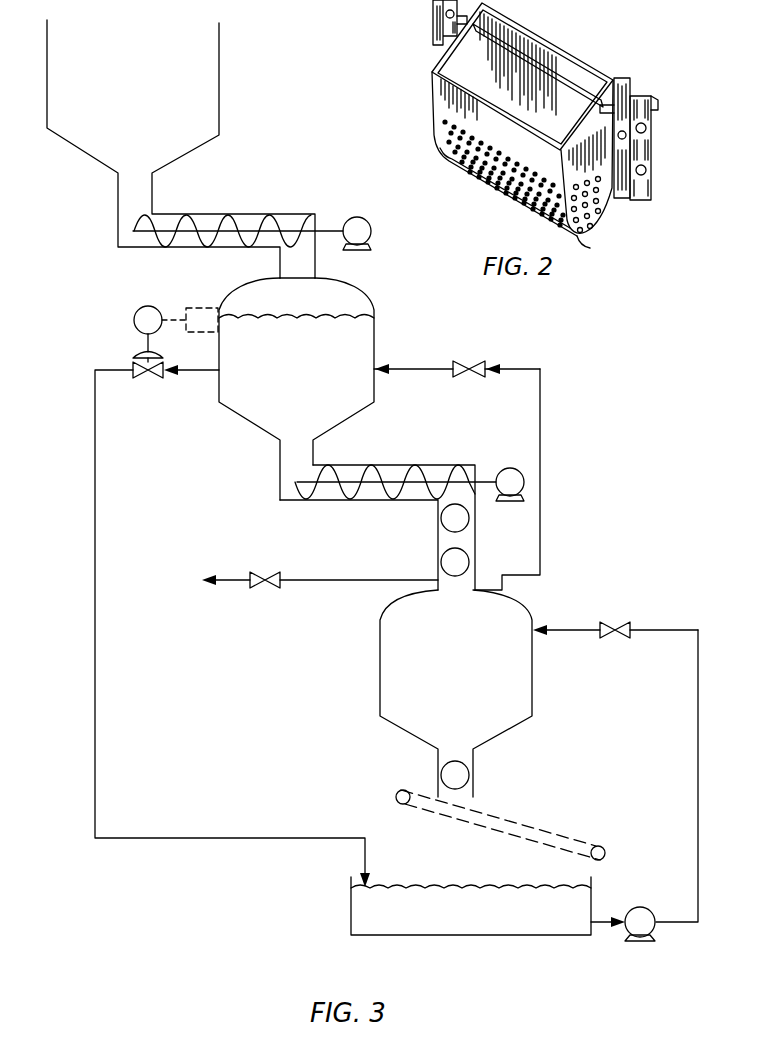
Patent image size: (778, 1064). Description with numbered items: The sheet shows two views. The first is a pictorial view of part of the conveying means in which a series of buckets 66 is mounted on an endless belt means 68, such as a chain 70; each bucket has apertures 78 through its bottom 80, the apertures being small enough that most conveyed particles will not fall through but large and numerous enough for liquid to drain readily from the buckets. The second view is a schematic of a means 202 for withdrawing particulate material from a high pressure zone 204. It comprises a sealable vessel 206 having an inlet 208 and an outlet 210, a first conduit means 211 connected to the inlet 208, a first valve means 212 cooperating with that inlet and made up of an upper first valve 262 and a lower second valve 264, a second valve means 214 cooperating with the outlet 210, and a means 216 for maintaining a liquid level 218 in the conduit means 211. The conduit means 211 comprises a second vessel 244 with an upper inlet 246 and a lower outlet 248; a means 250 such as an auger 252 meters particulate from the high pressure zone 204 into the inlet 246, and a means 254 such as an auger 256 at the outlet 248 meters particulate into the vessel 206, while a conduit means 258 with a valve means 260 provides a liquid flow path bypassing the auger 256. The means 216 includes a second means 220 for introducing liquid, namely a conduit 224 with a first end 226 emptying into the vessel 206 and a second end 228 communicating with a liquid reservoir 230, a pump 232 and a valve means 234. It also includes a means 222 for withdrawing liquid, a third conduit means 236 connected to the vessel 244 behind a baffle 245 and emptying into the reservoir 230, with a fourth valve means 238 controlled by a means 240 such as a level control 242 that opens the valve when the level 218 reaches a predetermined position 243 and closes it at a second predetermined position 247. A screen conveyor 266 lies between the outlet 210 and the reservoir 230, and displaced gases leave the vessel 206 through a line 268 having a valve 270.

In FIG. 2, the buckets 66 is at (433, 78).
In FIG. 2, the endless belt means 68 is at (624, 68).
In FIG. 2, the chain 70 is at (652, 112).
In FIG. 2, the apertures 78 is at (590, 238).
In FIG. 2, the bottoms 80 is at (600, 220).
In FIG. 3, the means for withdrawing a particulate material 202 is at (548, 349).
In FIG. 3, the high pressure zone 204 is at (140, 92).
In FIG. 3, the sealable vessel 206 is at (380, 663).
In FIG. 3, the inlet 208 is at (434, 589).
In FIG. 3, the outlet 210 is at (438, 760).
In FIG. 3, the first conduit means 211 is at (222, 466).
In FIG. 3, the first valve means 212 is at (430, 540).
In FIG. 3, the second valve means 214 is at (480, 774).
In FIG. 3, the means for maintaining a liquid level 216 is at (108, 310).
In FIG. 3, the liquid level 218 is at (265, 318).
In FIG. 3, the second means for introducing liquid 220 is at (678, 750).
In FIG. 3, the means for withdrawing liquid 222 is at (86, 353).
In FIG. 3, the conduit 224 is at (712, 838).
In FIG. 3, the first end 226 is at (536, 627).
In FIG. 3, the second end 228 is at (595, 925).
In FIG. 3, the liquid reservoir 230 is at (471, 906).
In FIG. 3, the pump 232 is at (654, 932).
In FIG. 3, the valve means 234 is at (626, 638).
In FIG. 3, the third conduit means 236 is at (95, 517).
In FIG. 3, the fourth valve means 238 is at (152, 378).
In FIG. 3, the means for opening the valve means 240 is at (160, 296).
In FIG. 3, the level control 242 is at (136, 313).
In FIG. 3, the predetermined position 243 is at (217, 308).
In FIG. 3, the second vessel 244 is at (375, 325).
In FIG. 3, the baffle 245 is at (222, 370).
In FIG. 3, the upper inlet 246 is at (315, 278).
In FIG. 3, the second predetermined position 247 is at (218, 333).
In FIG. 3, the lower outlet 248 is at (279, 446).
In FIG. 3, the means for metering particulate 250 is at (226, 205).
In FIG. 3, the auger 252 is at (173, 212).
In FIG. 3, the means for metering particulate material 254 is at (384, 452).
In FIG. 3, the auger 256 is at (477, 466).
In FIG. 3, the conduit means 258 is at (548, 445).
In FIG. 3, the valve means 260 is at (480, 360).
In FIG. 3, the upper first valve 262 is at (470, 518).
In FIG. 3, the lower second valve 264 is at (470, 561).
In FIG. 3, the screen conveyor 266 is at (512, 818).
In FIG. 3, the line 268 is at (311, 579).
In FIG. 3, the valve 270 is at (248, 587).